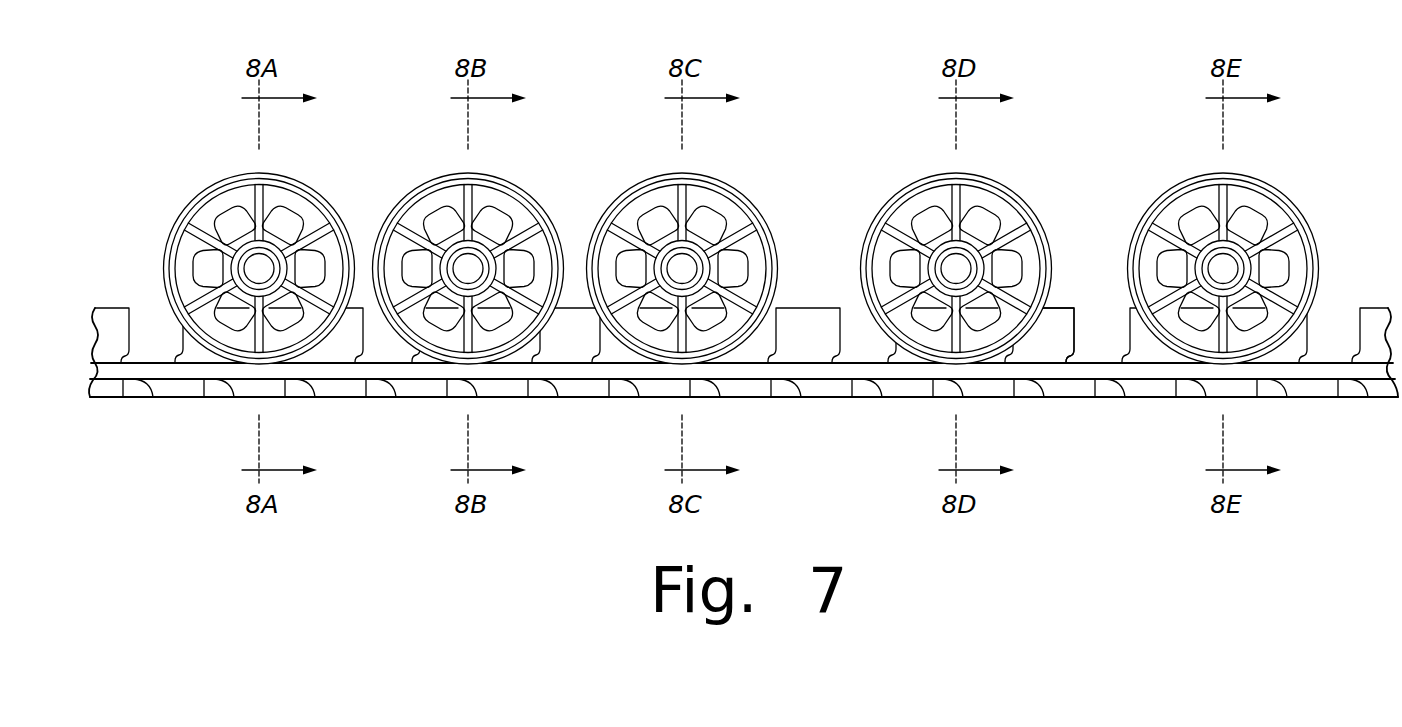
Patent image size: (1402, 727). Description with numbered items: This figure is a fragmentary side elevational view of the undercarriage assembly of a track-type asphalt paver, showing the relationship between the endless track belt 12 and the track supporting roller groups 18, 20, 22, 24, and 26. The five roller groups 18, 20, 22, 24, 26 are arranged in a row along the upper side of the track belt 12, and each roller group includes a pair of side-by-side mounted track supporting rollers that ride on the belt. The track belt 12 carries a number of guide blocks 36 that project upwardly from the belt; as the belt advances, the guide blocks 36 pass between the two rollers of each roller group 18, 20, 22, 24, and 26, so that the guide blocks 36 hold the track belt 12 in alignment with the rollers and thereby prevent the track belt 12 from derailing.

The endless track belt 12 is at (1328, 356).
The track supporting roller group 18 is at (1275, 167).
The track supporting roller group 20 is at (1008, 167).
The track supporting roller group 22 is at (734, 167).
The track supporting roller group 24 is at (520, 167).
The track supporting roller group 26 is at (311, 167).
The guide block 36 is at (803, 316).